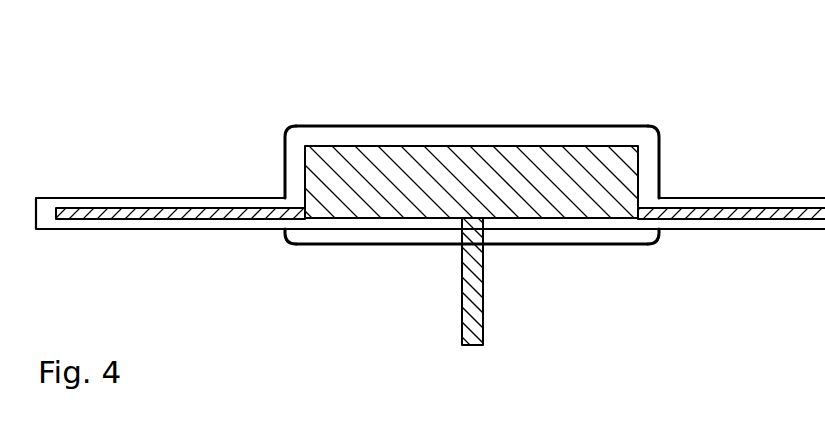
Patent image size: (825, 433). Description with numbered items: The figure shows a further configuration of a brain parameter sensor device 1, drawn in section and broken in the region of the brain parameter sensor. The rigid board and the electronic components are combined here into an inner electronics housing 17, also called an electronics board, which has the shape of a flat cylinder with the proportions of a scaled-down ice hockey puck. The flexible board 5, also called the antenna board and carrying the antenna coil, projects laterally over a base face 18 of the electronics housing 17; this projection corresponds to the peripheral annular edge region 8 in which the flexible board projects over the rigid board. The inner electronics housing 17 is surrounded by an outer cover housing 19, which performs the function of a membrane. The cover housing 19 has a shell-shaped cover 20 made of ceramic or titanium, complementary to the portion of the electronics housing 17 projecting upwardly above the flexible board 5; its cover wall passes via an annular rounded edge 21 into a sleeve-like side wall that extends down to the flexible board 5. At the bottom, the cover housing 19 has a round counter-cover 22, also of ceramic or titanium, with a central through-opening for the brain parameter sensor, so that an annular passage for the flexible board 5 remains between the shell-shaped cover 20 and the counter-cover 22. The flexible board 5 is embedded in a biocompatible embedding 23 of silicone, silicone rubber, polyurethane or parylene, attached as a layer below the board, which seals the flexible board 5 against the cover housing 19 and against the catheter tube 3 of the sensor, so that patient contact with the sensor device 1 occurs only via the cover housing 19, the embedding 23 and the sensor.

The brain parameter sensor device 1 is at (675, 94).
The catheter tube 3 is at (484, 325).
The flexible board 5 is at (111, 212).
The annular edge region 8 is at (172, 198).
The inner electronics housing 17 is at (574, 152).
The base face 18 is at (356, 221).
The outer cover housing 19 is at (500, 125).
The shell-shaped cover 20 is at (391, 128).
The annular rounded edge 21 is at (291, 128).
The counter-cover 22 is at (592, 246).
The biocompatible embedding 23 is at (777, 203).